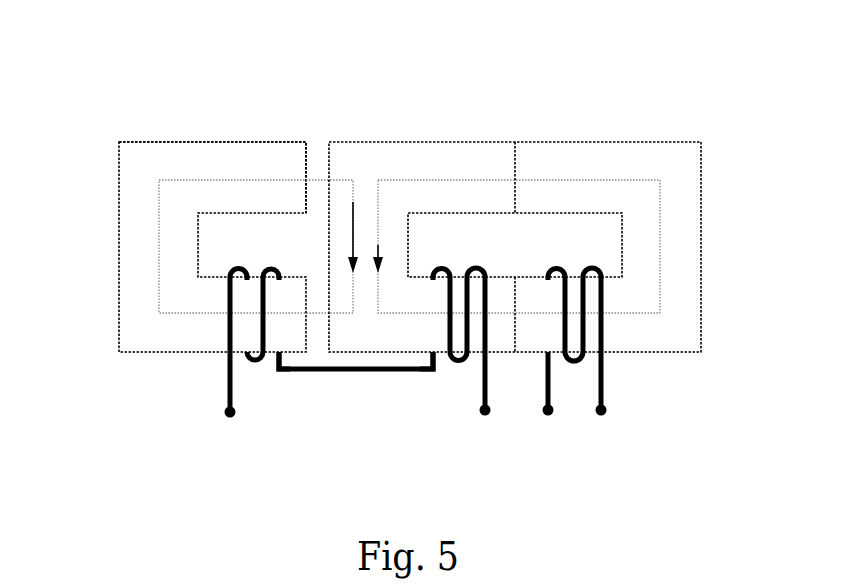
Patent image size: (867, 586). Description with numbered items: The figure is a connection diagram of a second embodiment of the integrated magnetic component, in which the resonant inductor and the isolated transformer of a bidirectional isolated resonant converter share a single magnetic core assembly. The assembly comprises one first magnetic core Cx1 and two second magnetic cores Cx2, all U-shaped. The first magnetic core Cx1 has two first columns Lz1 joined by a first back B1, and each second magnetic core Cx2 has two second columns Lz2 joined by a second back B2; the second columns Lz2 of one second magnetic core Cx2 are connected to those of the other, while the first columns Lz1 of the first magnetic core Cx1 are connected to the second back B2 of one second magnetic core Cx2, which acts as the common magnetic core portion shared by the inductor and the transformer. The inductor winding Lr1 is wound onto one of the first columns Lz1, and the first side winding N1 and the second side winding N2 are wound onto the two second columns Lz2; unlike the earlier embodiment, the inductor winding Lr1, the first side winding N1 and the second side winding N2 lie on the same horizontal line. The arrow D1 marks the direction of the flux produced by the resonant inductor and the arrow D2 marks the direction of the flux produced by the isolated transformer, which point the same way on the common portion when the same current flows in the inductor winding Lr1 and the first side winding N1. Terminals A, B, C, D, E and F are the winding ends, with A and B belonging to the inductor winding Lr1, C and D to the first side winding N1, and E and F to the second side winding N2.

The first magnetic core Cx1 is at (242, 86).
The second magnetic core Cx2 is at (557, 78).
The first back B1 is at (119, 258).
The second back B2 is at (329, 165).
The first column Lz1 is at (218, 278).
The second column Lz2 is at (425, 278).
The arrow representing the direction of the magnetic flux generated by the resonant D1 is at (353, 206).
The arrow representing the direction of the magnetic flux generated by the isolated D2 is at (378, 248).
The inductor winding Lr1 is at (298, 429).
The first side winding N1 is at (492, 435).
The second side winding N2 is at (622, 434).
The terminal A is at (212, 413).
The terminal B is at (281, 379).
The terminal C is at (429, 379).
The terminal D is at (471, 413).
The terminal E is at (534, 413).
The terminal F is at (589, 413).